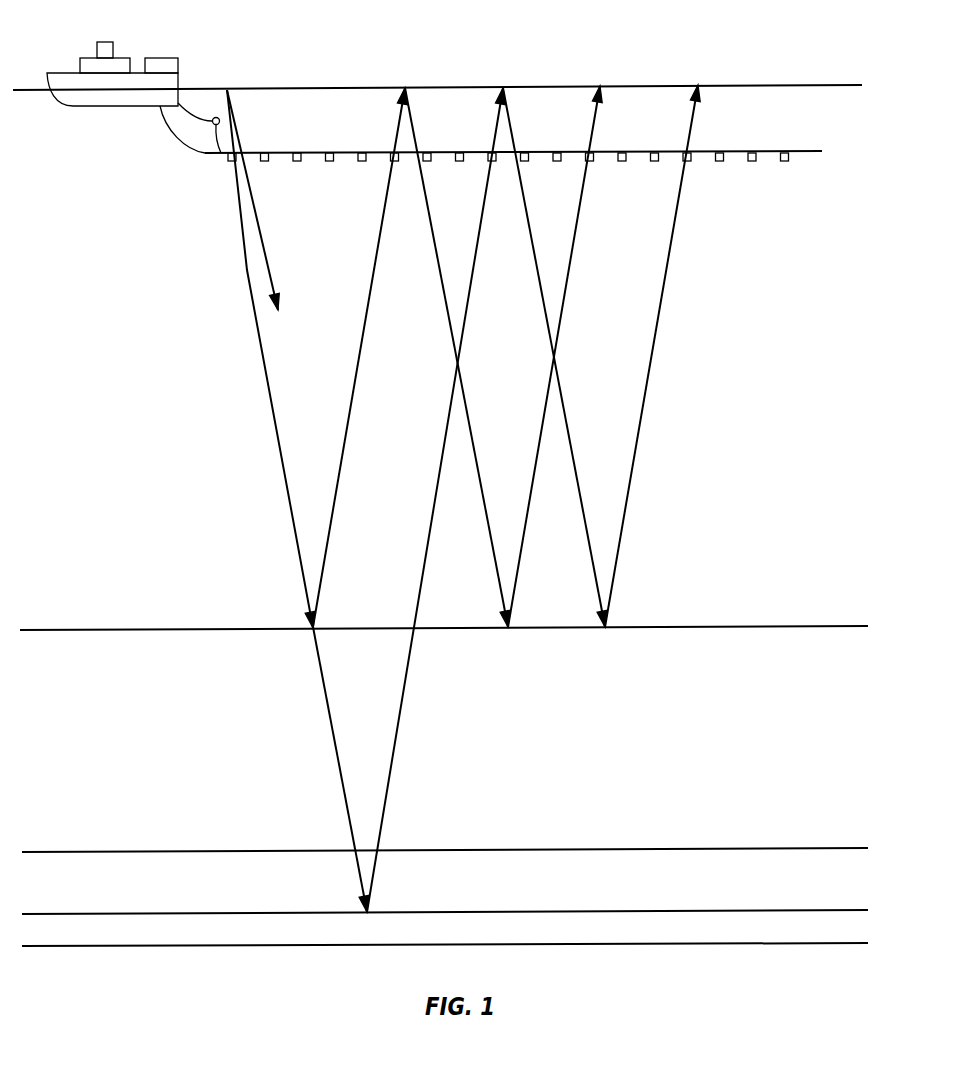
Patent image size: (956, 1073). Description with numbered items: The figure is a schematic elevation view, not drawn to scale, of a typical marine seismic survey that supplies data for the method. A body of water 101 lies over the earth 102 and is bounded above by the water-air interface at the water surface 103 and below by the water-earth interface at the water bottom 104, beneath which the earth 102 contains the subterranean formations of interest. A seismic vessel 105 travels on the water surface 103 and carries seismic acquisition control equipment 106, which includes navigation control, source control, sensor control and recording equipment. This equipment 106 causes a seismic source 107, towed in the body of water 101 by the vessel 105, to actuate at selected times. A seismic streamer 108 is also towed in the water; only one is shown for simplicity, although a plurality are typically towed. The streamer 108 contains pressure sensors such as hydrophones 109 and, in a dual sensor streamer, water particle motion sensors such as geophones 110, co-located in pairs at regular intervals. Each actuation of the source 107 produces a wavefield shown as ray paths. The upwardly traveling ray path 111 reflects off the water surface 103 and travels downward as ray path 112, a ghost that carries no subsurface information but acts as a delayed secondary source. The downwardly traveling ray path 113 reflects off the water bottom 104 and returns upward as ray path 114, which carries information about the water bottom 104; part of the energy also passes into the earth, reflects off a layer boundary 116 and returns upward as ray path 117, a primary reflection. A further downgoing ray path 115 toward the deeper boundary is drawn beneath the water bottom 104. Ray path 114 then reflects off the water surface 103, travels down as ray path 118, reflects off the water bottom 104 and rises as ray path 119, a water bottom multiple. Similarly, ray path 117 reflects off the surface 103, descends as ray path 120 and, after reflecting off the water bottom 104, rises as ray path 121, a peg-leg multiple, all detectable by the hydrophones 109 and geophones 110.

The body of water 101 is at (136, 388).
The earth 102 is at (139, 705).
The water surface 103 is at (537, 87).
The water bottom 104 is at (118, 629).
The seismic vessel 105 is at (104, 42).
The seismic acquisition control equipment 106 is at (167, 58).
The seismic source 107 is at (207, 153).
The seismic streamer 108 is at (623, 150).
The hydrophone 109 is at (303, 151).
The geophone 110 is at (330, 150).
The ray path 111 is at (214, 120).
The ray path 112 is at (262, 230).
The ray path 113 is at (282, 468).
The ray path 114 is at (341, 475).
The transmitted downgoing wavefield 115 is at (327, 708).
The layer boundary 116 is at (122, 913).
The ray path 117 is at (403, 705).
The ray path 118 is at (500, 581).
The ray path 119 is at (517, 580).
The ray path 120 is at (573, 452).
The ray path 121 is at (623, 533).